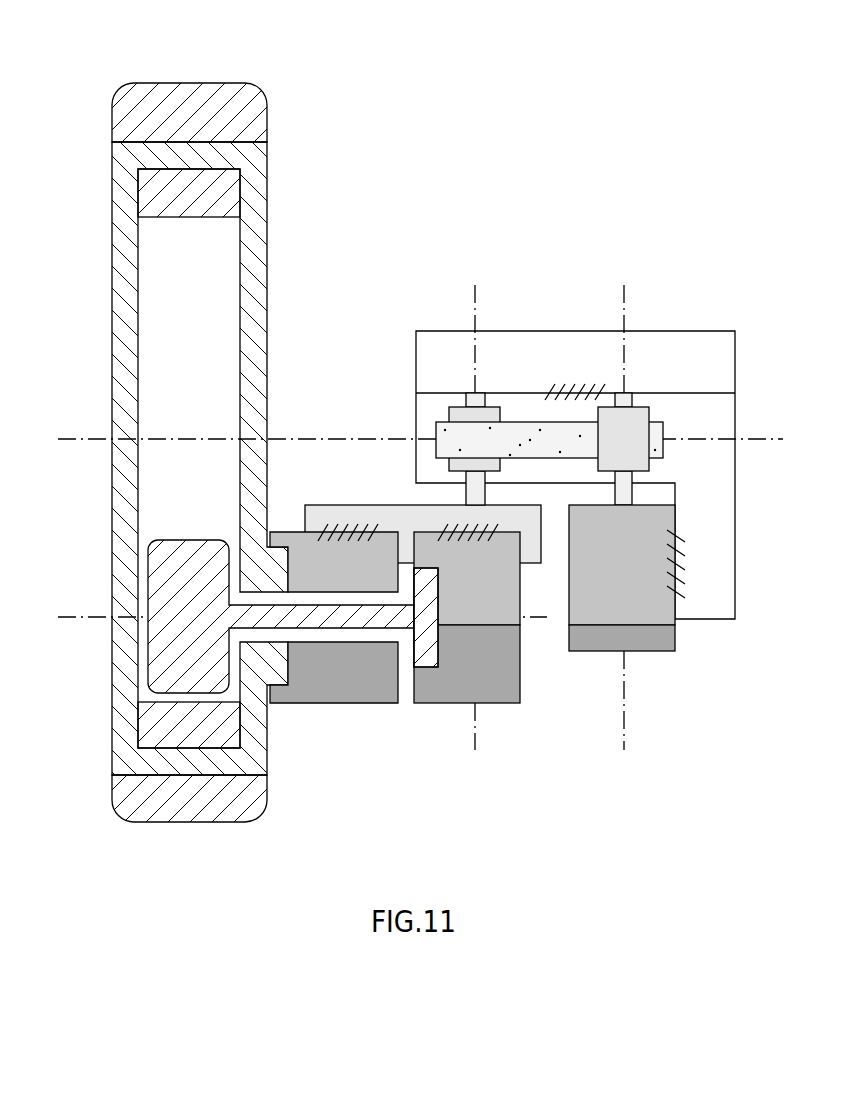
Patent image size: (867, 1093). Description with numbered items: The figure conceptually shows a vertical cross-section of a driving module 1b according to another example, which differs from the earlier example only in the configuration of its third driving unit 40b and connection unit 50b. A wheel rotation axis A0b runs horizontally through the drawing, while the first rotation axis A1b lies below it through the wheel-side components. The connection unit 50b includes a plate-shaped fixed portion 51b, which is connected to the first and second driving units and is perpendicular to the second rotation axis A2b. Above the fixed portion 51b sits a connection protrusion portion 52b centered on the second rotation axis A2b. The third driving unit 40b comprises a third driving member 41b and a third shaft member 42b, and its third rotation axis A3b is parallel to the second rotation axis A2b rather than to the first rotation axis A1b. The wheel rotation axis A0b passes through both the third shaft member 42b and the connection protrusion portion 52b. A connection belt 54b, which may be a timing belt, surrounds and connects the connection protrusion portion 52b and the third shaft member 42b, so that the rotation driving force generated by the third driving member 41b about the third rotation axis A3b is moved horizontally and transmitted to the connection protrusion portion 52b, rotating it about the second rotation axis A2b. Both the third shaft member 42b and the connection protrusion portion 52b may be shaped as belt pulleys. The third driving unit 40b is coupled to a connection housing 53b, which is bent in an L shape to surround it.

The driving module 1b is at (98, 37).
The wheel rotation axis A0b is at (398, 439).
The first rotation axis A1b is at (280, 616).
The second rotation axis A2b is at (475, 500).
The third rotation axis A3b is at (623, 500).
The connection unit 50b is at (391, 420).
The fixed portion 51b is at (368, 505).
The connection protrusion portion 52b is at (483, 407).
The connection housing 53b is at (725, 537).
The connection belt 54b is at (533, 432).
The third driving unit 40b is at (587, 672).
The third driving member 41b is at (657, 651).
The third shaft member 42b is at (632, 407).